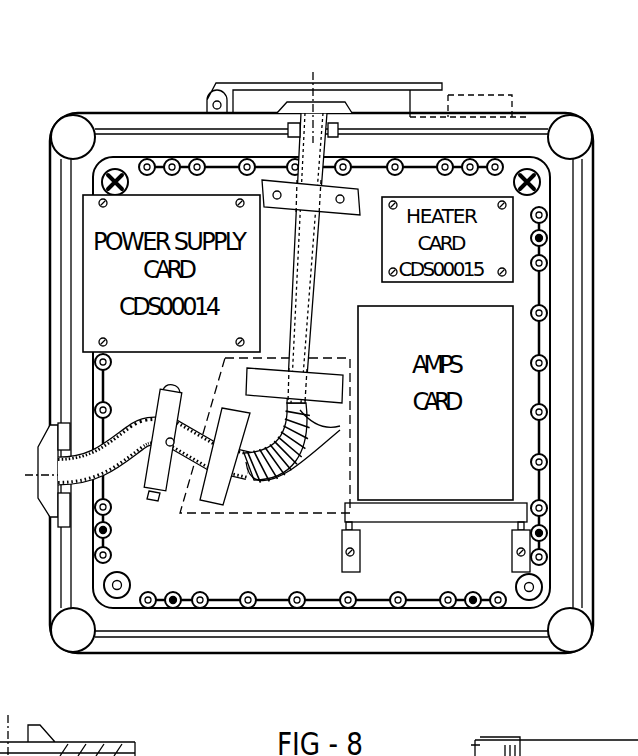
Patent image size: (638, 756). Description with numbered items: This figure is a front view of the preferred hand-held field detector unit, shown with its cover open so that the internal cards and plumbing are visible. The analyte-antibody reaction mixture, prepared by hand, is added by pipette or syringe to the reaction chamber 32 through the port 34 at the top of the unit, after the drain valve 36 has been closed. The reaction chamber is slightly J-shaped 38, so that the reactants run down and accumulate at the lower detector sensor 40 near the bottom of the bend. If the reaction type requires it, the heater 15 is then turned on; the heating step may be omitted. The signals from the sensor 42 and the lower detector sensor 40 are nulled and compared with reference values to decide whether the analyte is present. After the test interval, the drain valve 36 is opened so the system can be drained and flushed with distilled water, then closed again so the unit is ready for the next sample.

The heater 15 is at (285, 455).
The reaction chamber 32 is at (303, 287).
The port 34 is at (343, 117).
The drain valve 36 is at (158, 497).
The J-shaped portion of reaction chamber 38 is at (265, 498).
The lower detector sensor 40 is at (230, 413).
The sensor 42 is at (327, 370).